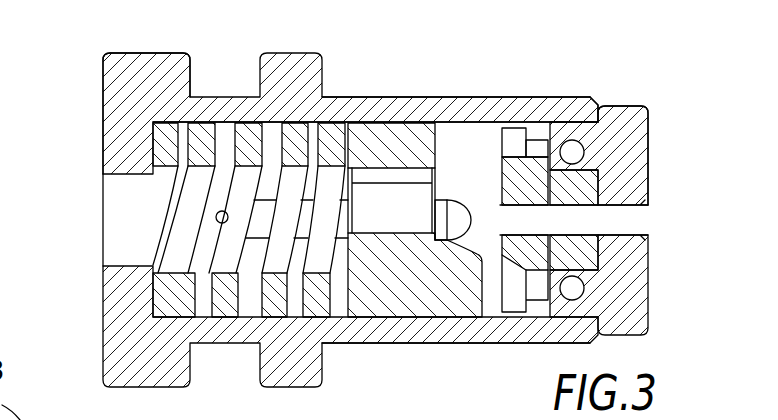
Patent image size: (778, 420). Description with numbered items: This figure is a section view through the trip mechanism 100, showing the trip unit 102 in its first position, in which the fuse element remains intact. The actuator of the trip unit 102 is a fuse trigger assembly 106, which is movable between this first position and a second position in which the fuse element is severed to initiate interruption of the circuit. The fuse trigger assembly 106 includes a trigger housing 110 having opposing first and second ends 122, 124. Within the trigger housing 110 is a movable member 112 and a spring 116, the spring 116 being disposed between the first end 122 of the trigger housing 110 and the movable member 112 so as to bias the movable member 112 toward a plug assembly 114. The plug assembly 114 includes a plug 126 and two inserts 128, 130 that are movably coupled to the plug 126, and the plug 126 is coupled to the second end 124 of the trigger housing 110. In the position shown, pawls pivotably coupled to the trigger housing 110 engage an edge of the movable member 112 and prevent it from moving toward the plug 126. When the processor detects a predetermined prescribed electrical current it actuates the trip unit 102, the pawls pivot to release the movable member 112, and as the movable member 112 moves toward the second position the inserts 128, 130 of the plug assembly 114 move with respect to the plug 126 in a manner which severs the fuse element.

The trip mechanism 100 is at (508, 376).
The trip unit 102 is at (430, 77).
The fuse trigger assembly 106 is at (503, 88).
The trigger housing 110 is at (338, 107).
The movable member 112 is at (430, 303).
The plug assembly 114 is at (666, 132).
The spring 116 is at (176, 282).
The first end 122 is at (123, 34).
The second end 124 is at (614, 85).
The plug 126 is at (643, 180).
The insert 128 is at (510, 176).
The insert 130 is at (590, 253).